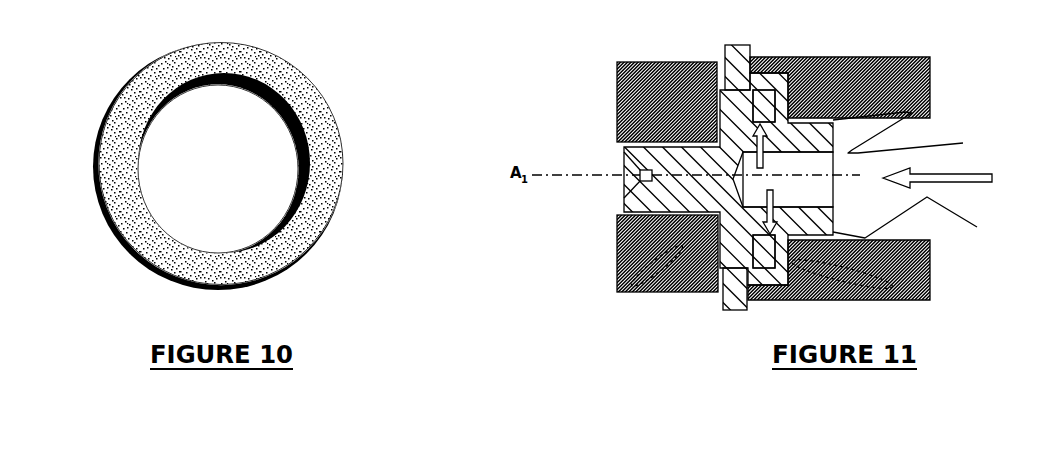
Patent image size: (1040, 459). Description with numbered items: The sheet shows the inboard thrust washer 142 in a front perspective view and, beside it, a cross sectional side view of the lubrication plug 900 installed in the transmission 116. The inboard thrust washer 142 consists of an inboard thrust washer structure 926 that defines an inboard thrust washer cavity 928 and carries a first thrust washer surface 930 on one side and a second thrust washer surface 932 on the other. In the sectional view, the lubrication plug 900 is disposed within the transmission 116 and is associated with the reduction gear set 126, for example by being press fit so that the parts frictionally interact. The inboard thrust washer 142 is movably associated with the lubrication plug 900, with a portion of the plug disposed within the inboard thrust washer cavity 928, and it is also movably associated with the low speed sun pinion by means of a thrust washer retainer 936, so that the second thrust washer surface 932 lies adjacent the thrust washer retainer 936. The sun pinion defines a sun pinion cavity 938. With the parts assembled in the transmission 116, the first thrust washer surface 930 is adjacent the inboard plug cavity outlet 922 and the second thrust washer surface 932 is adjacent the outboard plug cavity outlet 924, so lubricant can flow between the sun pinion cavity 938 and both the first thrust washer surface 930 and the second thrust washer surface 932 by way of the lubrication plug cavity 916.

In FIG. 10, the inboard thrust washer 142 is at (181, 165).
In FIG. 11, the inboard thrust washer 142 is at (694, 165).
In FIG. 10, the inboard thrust washer structure 926 is at (221, 164).
In FIG. 10, the second thrust washer surface 932 is at (224, 163).
In FIG. 11, the second thrust washer surface 932 is at (694, 187).
In FIG. 10, the inboard thrust washer cavity 928 is at (245, 188).
In FIG. 10, the first thrust washer surface 930 is at (235, 164).
In FIG. 11, the first thrust washer surface 930 is at (708, 178).
In FIG. 11, the reduction gear set 126 is at (708, 157).
In FIG. 11, the transmission 116 is at (708, 155).
In FIG. 11, the lubrication plug 900 is at (694, 180).
In FIG. 11, the lubrication plug cavity 916 is at (816, 196).
In FIG. 11, the inboard plug cavity outlet 922 is at (915, 132).
In FIG. 11, the outboard plug cavity outlet 924 is at (977, 227).
In FIG. 11, the sun pinion cavity 938 is at (963, 211).
In FIG. 11, the thrust washer retainer 936 is at (694, 197).